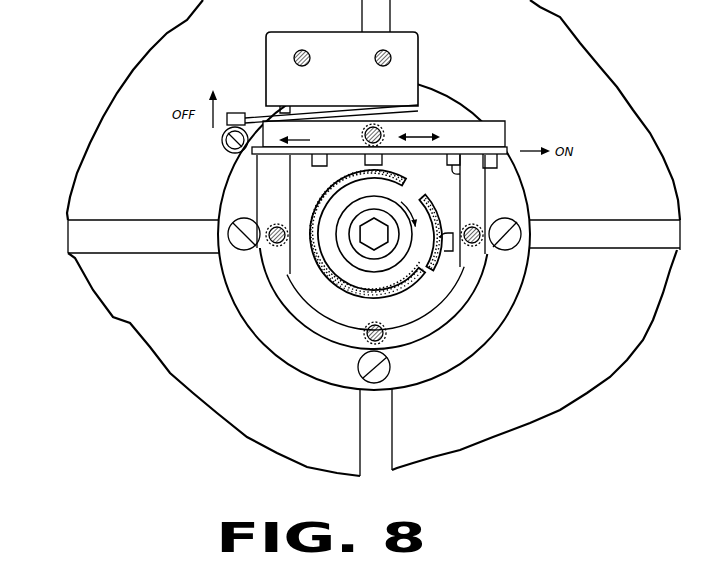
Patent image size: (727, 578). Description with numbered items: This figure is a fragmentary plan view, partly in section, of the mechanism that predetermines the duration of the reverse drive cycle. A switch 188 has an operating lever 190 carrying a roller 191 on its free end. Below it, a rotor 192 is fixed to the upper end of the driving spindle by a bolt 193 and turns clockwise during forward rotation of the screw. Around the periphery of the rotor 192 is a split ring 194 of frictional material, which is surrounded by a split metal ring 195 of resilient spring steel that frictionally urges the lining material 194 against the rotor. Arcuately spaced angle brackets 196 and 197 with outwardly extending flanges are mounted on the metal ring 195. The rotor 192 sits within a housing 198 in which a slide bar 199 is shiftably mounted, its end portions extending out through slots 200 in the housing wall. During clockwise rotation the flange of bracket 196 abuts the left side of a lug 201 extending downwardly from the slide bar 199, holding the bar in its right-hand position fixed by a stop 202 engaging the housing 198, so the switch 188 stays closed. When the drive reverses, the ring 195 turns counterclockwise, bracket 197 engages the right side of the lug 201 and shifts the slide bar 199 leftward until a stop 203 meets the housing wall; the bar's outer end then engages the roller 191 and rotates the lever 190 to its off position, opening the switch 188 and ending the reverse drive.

The switch 188 is at (422, 45).
The operating lever 190 is at (247, 114).
The roller 191 is at (224, 143).
The rotor 192 is at (412, 265).
The bolt 193 is at (300, 297).
The split ring 194 is at (317, 263).
The split metal ring 195 is at (368, 248).
The angle bracket 196 is at (357, 170).
The angle bracket 197 is at (455, 248).
The housing 198 is at (417, 330).
The slide bar 199 is at (437, 149).
The slots 200 is at (470, 150).
The lug 201 is at (378, 158).
The stop 202 is at (460, 174).
The stop 203 is at (314, 161).